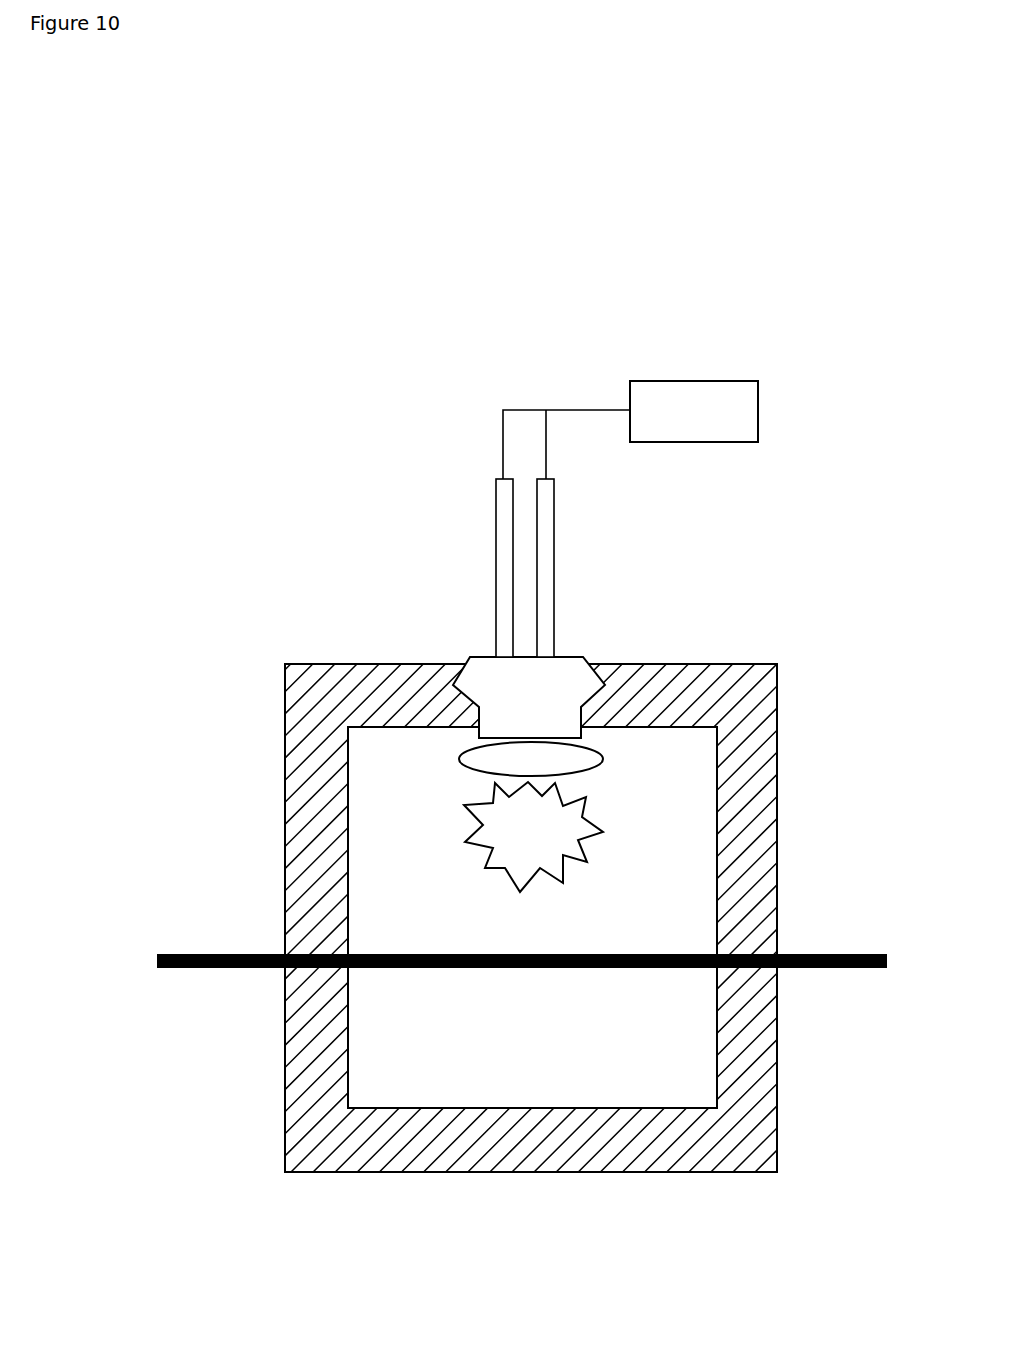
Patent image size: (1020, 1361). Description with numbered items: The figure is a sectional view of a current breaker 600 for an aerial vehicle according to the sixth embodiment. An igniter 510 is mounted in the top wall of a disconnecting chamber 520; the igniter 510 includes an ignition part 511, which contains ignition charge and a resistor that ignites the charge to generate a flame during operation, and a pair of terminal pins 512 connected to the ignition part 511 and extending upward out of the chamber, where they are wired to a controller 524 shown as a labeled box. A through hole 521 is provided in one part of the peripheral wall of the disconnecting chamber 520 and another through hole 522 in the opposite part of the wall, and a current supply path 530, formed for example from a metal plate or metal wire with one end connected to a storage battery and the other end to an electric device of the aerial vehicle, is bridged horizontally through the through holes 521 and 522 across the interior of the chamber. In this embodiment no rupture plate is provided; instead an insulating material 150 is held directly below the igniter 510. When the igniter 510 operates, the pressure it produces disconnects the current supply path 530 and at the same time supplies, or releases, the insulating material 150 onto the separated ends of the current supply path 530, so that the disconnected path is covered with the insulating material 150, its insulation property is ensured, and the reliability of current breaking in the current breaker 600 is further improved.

The current breaker for an aerial vehicle 600 is at (555, 230).
The controller 524 is at (676, 380).
The terminal pins 512 is at (505, 516).
The ignition part 511 is at (485, 670).
The igniter 510 is at (521, 608).
The disconnecting chamber 520 is at (510, 868).
The through hole 521 is at (302, 957).
The through hole 522 is at (743, 951).
The insulating material 150 is at (573, 764).
The current supply path 530 is at (188, 972).